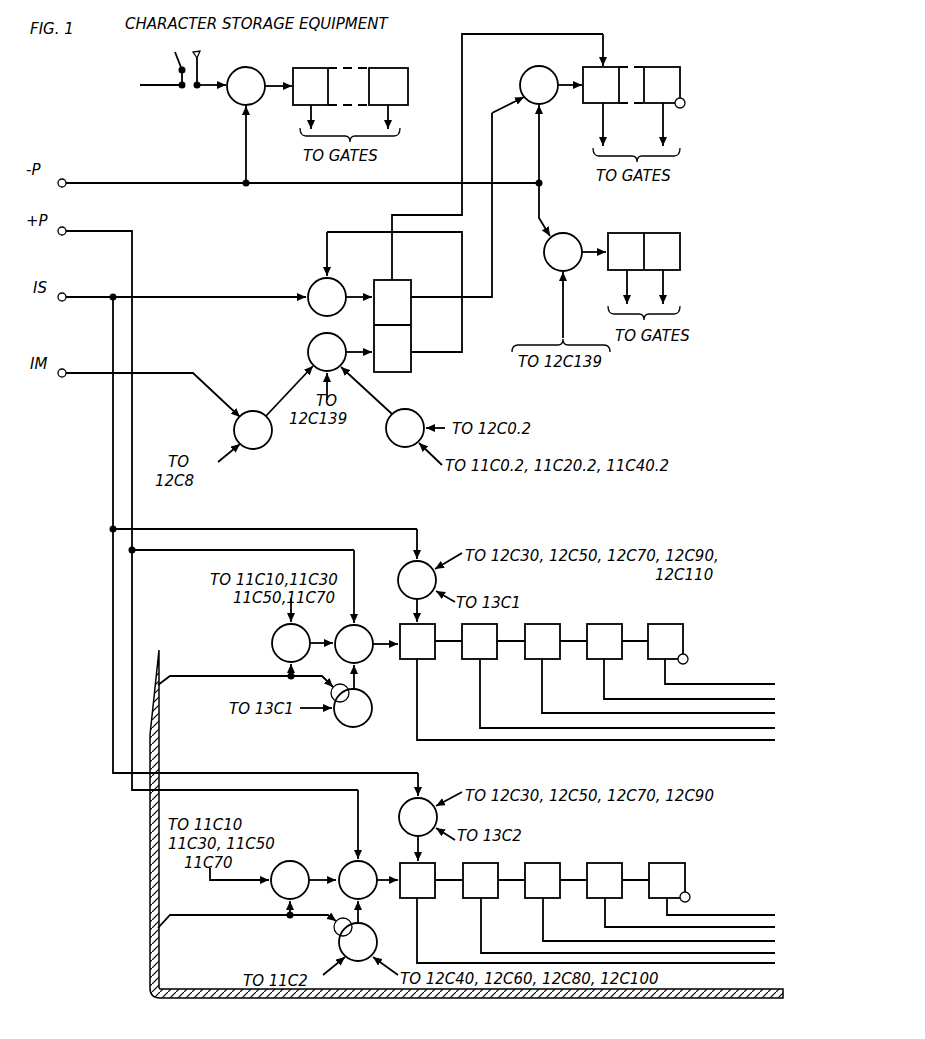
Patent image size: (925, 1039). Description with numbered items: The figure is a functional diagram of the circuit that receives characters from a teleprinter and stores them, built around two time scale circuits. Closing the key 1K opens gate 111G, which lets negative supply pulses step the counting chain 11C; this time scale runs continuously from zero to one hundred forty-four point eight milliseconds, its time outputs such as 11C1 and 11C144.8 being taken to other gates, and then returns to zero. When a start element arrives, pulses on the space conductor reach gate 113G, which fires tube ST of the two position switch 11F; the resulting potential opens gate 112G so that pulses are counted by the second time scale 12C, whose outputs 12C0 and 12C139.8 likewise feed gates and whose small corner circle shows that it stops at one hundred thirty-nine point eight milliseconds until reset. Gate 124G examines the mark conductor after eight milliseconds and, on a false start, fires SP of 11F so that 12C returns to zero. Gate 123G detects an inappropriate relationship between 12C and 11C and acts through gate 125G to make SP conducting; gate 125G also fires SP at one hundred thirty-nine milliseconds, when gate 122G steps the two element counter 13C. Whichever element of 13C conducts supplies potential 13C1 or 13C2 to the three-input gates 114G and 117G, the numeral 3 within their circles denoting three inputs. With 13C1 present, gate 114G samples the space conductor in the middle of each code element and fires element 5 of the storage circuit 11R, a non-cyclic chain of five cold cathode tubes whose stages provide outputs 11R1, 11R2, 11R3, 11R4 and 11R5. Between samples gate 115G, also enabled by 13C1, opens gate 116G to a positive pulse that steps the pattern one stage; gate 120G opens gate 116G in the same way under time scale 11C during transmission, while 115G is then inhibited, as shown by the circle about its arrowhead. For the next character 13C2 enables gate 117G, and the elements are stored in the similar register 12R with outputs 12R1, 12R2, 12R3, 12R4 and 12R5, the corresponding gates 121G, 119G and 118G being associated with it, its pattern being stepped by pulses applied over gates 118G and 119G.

The key 1K is at (183, 80).
The gate 111G is at (253, 115).
The time scale counting circuit 11C is at (353, 73).
The counter output to gates 11C1 is at (329, 118).
The counter output to gates 11C144.8 is at (421, 118).
The gate 112G is at (496, 171).
The time scale circuit 12C is at (635, 75).
The counter output to gates 12C0 is at (621, 124).
The counter output to gates 12C139.8 is at (696, 124).
The gate 122G is at (575, 277).
The two element counter circuit 13C is at (644, 239).
The potential from element 1 of counter 13C 13C1 is at (606, 287).
The input from element 2 of counter 13C 13C2 is at (682, 287).
The gate 113G is at (365, 292).
The two position switch 11F is at (401, 315).
The gate 125G is at (319, 361).
The gate 124G is at (265, 417).
The gate 123G is at (393, 416).
The three-input gate 114G is at (412, 585).
The gate 120G is at (280, 639).
The gate 116G is at (357, 650).
The gate 115G is at (357, 705).
The storage circuit 11R is at (544, 631).
The register output 11R1 is at (720, 671).
The register output 11R2 is at (689, 679).
The register output 11R3 is at (658, 686).
The register output 11R4 is at (627, 693).
The register output 11R5 is at (596, 699).
The three-input gate 117G is at (417, 824).
The gate 121G is at (273, 881).
The gate 119G is at (370, 883).
The gate 118G is at (369, 943).
The multi-pattern register 12R is at (545, 870).
The register output 12R1 is at (721, 906).
The register output 12R2 is at (690, 912).
The register output 12R3 is at (659, 919).
The register output 12R4 is at (628, 925).
The register output 12R5 is at (596, 930).
The numeral within gate circle 3 is at (245, 689).
The element 5 of storage circuit 11R 5 is at (247, 928).